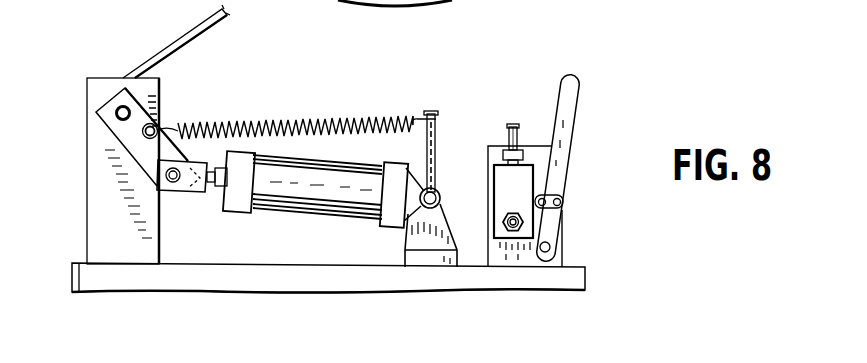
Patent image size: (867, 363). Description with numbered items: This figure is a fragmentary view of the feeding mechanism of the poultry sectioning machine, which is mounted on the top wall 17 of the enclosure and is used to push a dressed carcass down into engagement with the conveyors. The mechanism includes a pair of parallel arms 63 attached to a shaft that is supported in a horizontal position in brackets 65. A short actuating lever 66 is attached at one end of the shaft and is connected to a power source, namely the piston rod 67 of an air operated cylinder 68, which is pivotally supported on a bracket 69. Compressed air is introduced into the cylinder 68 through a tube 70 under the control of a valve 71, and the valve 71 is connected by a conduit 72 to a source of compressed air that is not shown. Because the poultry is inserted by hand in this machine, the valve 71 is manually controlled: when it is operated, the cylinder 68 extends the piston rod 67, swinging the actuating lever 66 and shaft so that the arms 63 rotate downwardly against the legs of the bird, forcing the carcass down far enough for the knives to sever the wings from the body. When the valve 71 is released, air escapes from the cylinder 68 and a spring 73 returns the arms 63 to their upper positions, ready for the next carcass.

The top wall 17 is at (260, 265).
The parallel arms 63 is at (172, 43).
The brackets 65 is at (93, 92).
The actuating lever 66 is at (158, 106).
The piston rod 67 is at (212, 190).
The air operated cylinder 68 is at (327, 197).
The bracket 69 is at (427, 230).
The tube 70 is at (510, 150).
The valve 71 is at (502, 183).
The conduit 72 is at (508, 223).
The spring 73 is at (286, 118).